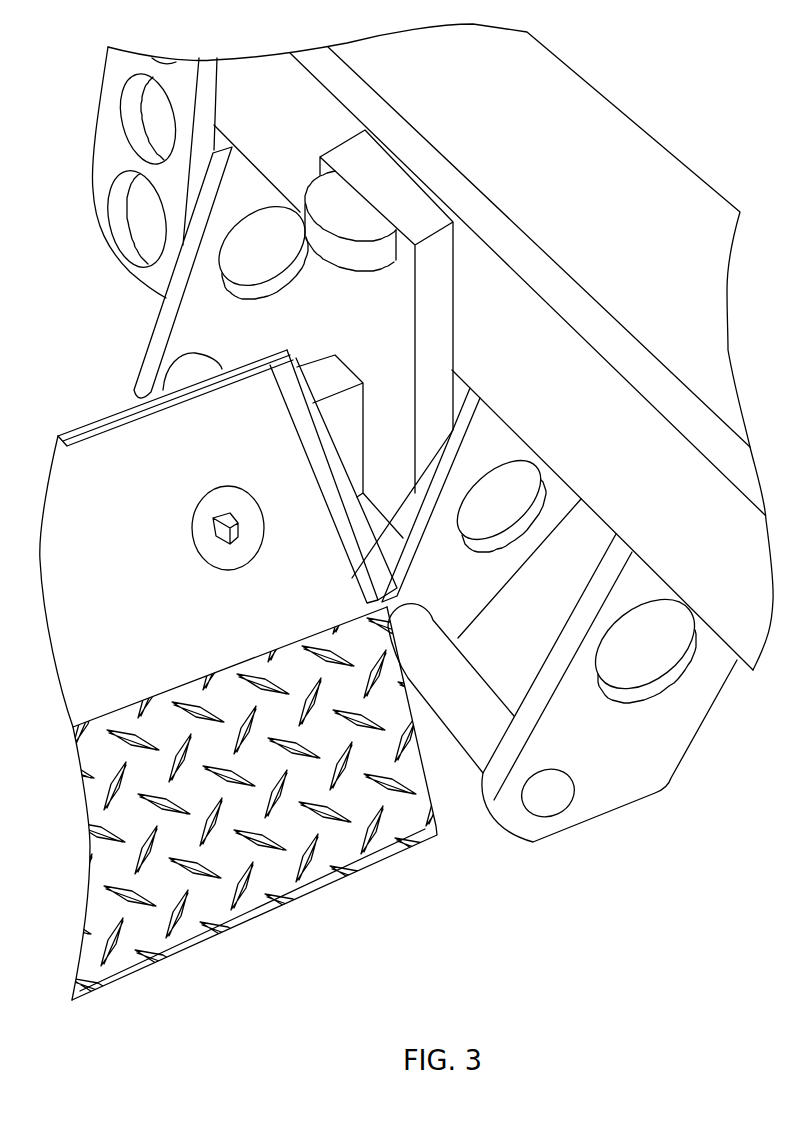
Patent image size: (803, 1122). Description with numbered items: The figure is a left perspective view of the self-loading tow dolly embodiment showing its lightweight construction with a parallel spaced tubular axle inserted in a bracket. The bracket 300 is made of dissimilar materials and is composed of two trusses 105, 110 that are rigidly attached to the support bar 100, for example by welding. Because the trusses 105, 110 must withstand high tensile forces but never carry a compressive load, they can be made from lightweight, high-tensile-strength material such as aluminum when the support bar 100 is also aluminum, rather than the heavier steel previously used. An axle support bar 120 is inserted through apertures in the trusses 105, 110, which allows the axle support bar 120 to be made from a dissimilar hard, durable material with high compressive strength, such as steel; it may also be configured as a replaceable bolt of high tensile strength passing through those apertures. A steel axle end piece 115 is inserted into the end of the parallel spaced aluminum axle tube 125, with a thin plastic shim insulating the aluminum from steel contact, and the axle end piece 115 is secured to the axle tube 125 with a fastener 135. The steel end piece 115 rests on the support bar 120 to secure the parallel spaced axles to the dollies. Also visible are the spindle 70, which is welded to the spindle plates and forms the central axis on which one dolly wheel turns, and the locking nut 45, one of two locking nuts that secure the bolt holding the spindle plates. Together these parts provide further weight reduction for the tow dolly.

The locking nut 45 is at (400, 842).
The spindle 70 is at (138, 228).
The support bar 100 is at (588, 420).
The truss 105 is at (143, 372).
The truss 110 is at (500, 572).
The axle end piece 115 is at (441, 318).
The axle support bar 120 is at (200, 367).
The parallel spaced aluminum axle tube 125 is at (92, 436).
The fastener 135 is at (200, 533).
The bracket 300 is at (404, 527).